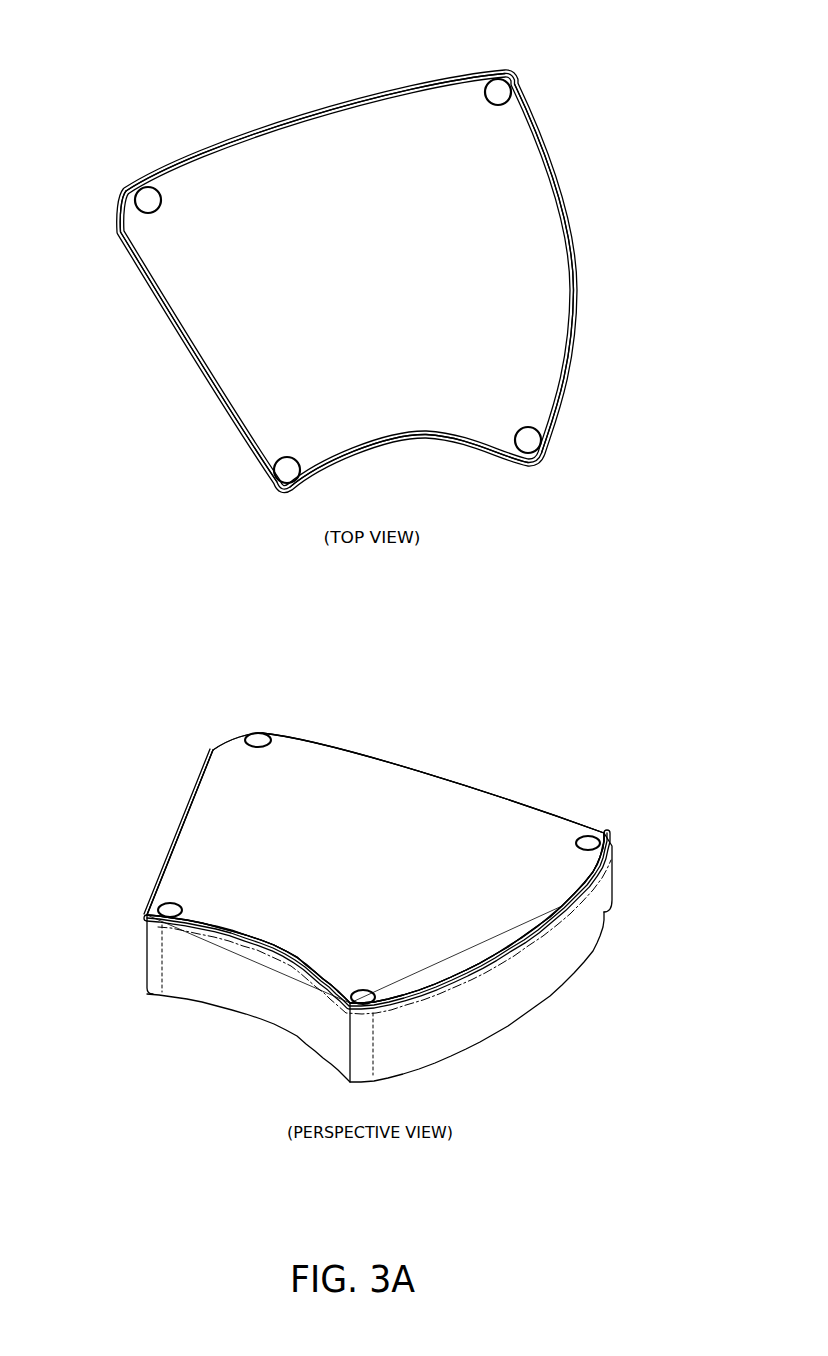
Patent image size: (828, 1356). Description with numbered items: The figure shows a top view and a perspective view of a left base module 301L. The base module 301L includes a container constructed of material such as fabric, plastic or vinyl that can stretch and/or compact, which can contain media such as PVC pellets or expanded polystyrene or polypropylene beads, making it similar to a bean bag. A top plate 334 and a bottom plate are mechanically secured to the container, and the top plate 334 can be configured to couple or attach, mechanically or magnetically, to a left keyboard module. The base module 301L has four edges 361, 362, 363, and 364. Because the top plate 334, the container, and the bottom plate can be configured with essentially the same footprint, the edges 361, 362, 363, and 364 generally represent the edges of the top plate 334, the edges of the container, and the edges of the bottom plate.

The left base module 301L is at (395, 885).
The edge 361 is at (178, 345).
The edge 362 is at (431, 443).
The edge 363 is at (497, 1019).
The edge 364 is at (389, 82).
The top plate 334 is at (542, 902).